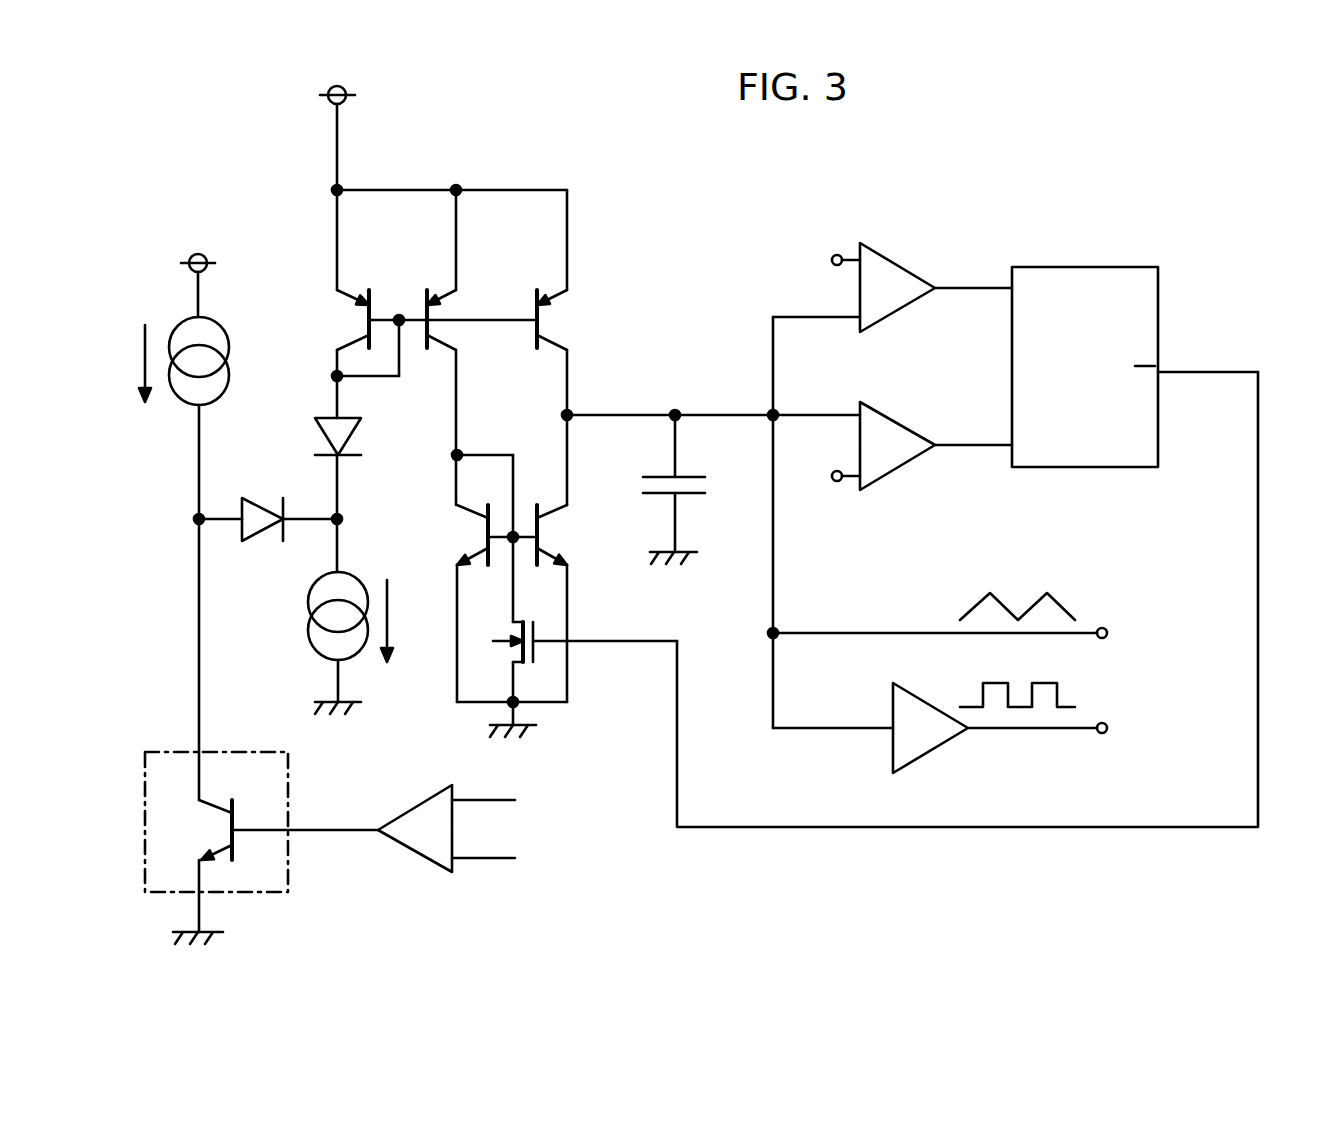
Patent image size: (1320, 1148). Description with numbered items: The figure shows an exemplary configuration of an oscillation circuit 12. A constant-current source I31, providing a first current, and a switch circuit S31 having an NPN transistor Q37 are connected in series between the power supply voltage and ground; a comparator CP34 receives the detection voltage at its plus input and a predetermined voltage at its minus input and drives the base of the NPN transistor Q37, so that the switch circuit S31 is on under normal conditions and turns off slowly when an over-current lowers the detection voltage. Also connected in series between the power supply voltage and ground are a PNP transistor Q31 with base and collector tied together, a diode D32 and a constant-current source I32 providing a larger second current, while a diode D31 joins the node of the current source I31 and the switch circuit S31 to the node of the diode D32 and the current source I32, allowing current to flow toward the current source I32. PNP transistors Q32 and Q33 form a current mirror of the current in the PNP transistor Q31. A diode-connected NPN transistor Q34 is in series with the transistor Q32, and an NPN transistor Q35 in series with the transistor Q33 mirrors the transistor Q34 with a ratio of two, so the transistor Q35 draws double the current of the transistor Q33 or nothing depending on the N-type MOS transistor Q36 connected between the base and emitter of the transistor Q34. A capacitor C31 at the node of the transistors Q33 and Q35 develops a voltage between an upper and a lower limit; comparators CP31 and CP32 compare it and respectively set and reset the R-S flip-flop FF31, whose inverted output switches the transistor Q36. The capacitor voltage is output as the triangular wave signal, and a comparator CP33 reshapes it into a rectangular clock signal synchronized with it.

The oscillation circuit 12 is at (494, 74).
The PNP transistor Q31 is at (382, 338).
The PNP transistor Q32 is at (482, 381).
The PNP transistor Q33 is at (578, 380).
The NPN transistor Q34 is at (485, 578).
The NPN transistor Q35 is at (578, 603).
The N-type MOS transistor Q36 is at (585, 662).
The NPN transistor Q37 is at (288, 851).
The diode D31 is at (268, 504).
The diode D32 is at (362, 495).
The constant-current source I31 is at (230, 342).
The constant-current source I32 is at (308, 639).
The capacitor C31 is at (699, 483).
The comparator CP31 is at (921, 240).
The comparator CP32 is at (896, 420).
The comparator CP33 is at (953, 675).
The comparator CP34 is at (417, 800).
The R-S type flip-flop circuit FF31 is at (1085, 267).
The switch circuit S31 is at (215, 752).